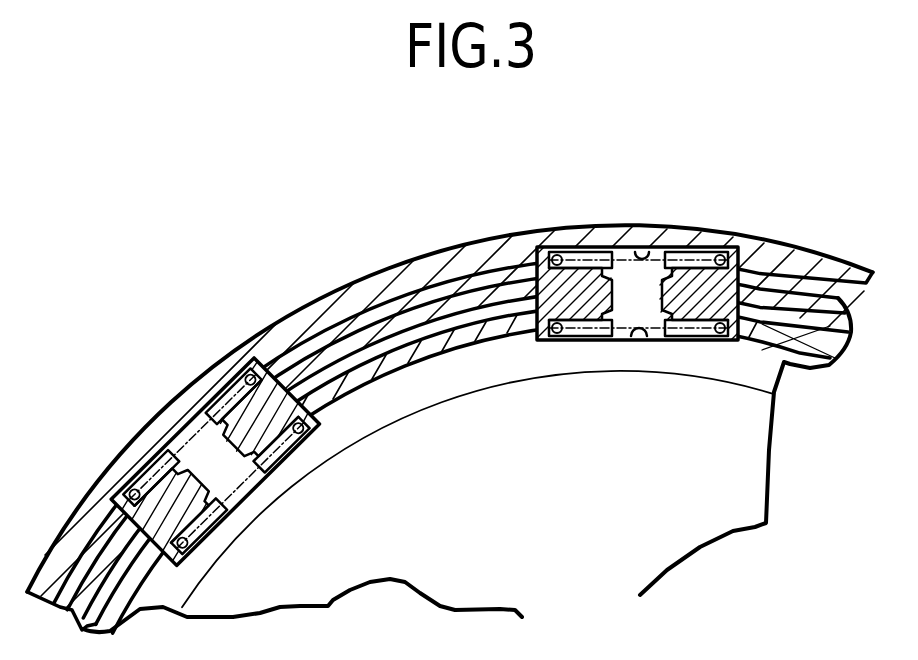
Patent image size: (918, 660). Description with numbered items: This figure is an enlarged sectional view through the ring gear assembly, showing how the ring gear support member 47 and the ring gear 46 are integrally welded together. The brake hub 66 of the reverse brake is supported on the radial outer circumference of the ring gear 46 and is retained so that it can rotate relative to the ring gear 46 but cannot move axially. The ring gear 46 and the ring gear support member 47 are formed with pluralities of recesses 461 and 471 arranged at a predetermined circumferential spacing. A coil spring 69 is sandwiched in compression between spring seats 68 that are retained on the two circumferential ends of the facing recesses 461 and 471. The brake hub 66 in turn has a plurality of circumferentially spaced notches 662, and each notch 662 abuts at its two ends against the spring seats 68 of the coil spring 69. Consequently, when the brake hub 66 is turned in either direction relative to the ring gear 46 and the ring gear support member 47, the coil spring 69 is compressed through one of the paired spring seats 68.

The ring gear support member 47 is at (462, 240).
The recess 471 is at (654, 247).
The spring seat 68 is at (611, 258).
The brake hub 66 is at (360, 321).
The notch 662 is at (565, 286).
The recess 461 is at (638, 337).
The coil spring 69 is at (709, 340).
The ring gear 46 is at (433, 378).